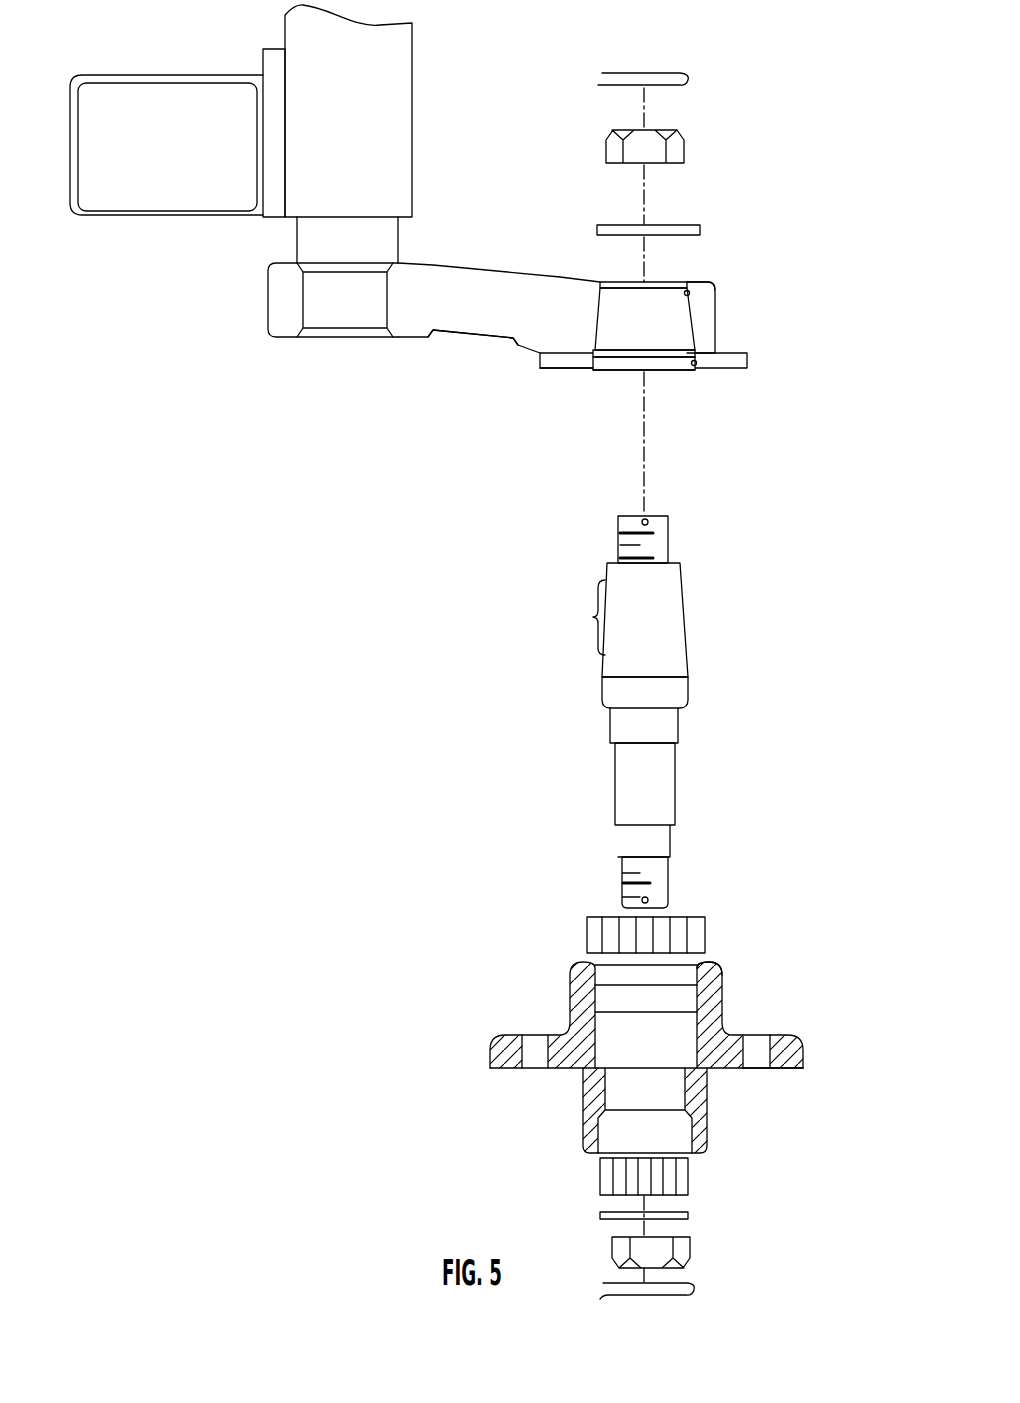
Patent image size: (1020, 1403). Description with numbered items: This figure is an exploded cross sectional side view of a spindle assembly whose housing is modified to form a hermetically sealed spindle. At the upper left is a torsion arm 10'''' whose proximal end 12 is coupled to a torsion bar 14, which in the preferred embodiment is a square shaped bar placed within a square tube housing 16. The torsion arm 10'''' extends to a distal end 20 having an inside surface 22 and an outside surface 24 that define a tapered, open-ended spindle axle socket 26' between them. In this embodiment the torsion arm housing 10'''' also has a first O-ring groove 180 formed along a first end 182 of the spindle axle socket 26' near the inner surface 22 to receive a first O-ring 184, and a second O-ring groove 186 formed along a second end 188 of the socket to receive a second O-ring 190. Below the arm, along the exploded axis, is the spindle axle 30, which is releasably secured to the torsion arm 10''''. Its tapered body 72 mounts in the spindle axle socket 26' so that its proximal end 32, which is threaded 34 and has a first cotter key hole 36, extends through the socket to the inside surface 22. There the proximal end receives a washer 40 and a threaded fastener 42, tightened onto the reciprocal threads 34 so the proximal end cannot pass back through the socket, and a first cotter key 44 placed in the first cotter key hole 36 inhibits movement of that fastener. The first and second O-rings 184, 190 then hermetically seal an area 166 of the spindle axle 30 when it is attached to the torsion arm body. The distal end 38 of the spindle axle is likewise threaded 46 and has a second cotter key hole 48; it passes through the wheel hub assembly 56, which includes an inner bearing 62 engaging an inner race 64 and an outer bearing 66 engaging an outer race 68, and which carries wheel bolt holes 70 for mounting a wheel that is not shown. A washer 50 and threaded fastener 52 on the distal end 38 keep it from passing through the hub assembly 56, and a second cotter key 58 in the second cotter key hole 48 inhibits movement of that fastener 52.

The square tube housing 16 is at (412, 132).
The torsion bar 14 is at (297, 232).
The proximal end 12 is at (275, 337).
The torsion arm 10'''' is at (473, 365).
The inside surface 22 is at (558, 277).
The distal end 20 is at (715, 285).
The first end 182 is at (700, 281).
The first O-ring 184 is at (687, 296).
The first O-ring groove 180 is at (667, 290).
The outside surface 24 is at (562, 370).
The second end 188 is at (600, 370).
The second O-ring 190 is at (657, 361).
The second O-ring groove 186 is at (675, 369).
The spindle axle socket 26' is at (720, 385).
The first cotter key 44 is at (692, 77).
The threaded fastener 42 is at (685, 145).
The washer 40 is at (698, 227).
The first cotter key hole 36 is at (647, 520).
The proximal end 32 is at (672, 520).
The threads 34 is at (670, 552).
The tapered body 72 is at (685, 623).
The sealed area 166 is at (579, 617).
The spindle axle 30 is at (688, 687).
The threads 46 is at (672, 870).
The distal end 38 is at (667, 907).
The second cotter key hole 48 is at (642, 900).
The inner bearing 62 is at (707, 935).
The inner race 64 is at (720, 967).
The wheel hub assembly 56 is at (803, 1060).
The wheel bolt holes 70 is at (758, 1069).
The outer race 68 is at (680, 1138).
The outer bearing 66 is at (688, 1178).
The washer 50 is at (690, 1217).
The threaded fastener 52 is at (692, 1250).
The second cotter key 58 is at (695, 1290).